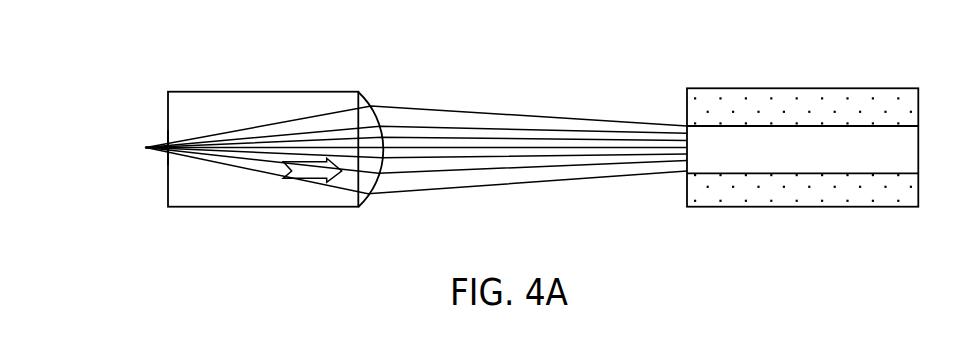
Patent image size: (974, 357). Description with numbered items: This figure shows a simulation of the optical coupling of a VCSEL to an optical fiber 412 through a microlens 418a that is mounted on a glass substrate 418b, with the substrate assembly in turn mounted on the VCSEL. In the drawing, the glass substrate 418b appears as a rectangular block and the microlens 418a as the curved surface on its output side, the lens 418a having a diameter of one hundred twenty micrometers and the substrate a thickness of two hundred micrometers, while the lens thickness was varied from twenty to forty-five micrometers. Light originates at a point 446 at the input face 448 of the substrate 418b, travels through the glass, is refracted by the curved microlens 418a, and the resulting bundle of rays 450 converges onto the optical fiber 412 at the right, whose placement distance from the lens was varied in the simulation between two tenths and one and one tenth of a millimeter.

The optical fiber 412 is at (734, 86).
The microlens 418a is at (365, 117).
The glass substrate 418b is at (273, 108).
The light source point 446 is at (145, 153).
The input facet of lens 448 is at (166, 141).
The light rays 450 is at (514, 105).